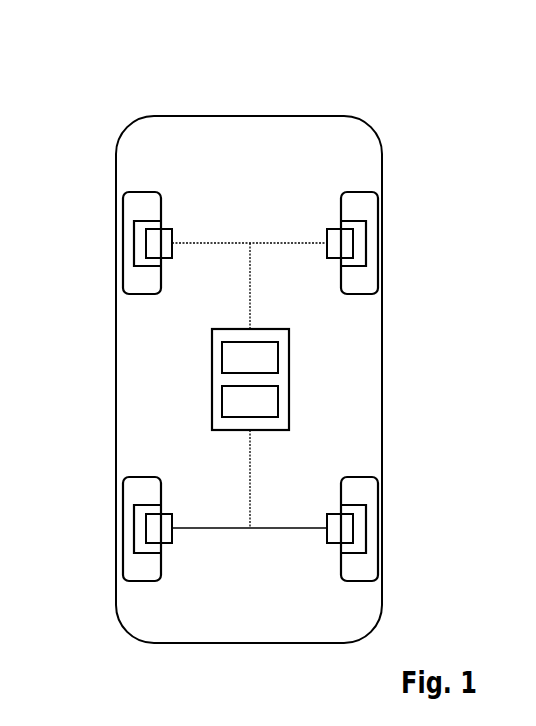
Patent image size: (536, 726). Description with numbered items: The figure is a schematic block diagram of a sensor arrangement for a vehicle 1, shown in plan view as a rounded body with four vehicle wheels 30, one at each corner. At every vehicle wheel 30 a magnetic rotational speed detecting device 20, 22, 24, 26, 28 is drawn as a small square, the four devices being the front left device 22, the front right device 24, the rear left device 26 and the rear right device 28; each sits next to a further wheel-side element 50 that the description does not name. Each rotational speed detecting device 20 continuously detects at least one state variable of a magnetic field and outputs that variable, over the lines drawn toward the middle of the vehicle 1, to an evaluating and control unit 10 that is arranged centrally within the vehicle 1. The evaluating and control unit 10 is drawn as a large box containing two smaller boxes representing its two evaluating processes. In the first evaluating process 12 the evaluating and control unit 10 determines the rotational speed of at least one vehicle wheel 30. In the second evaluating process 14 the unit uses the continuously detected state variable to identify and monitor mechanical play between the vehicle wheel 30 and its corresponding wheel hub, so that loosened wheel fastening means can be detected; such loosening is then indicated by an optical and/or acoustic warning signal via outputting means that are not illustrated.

The vehicle 1 is at (62, 98).
The evaluating and control unit 10 is at (256, 379).
The first evaluating process 12 is at (230, 359).
The second evaluating process 14 is at (230, 401).
The rotational speed detecting device 20 is at (249, 367).
The rotational speed detecting device 22 is at (166, 233).
The rotational speed detecting device 24 is at (333, 231).
The rotational speed detecting device 26 is at (166, 518).
The rotational speed detecting device 28 is at (333, 516).
The vehicle wheel 30 is at (131, 207).
The brake / wheel unit 50 is at (140, 255).